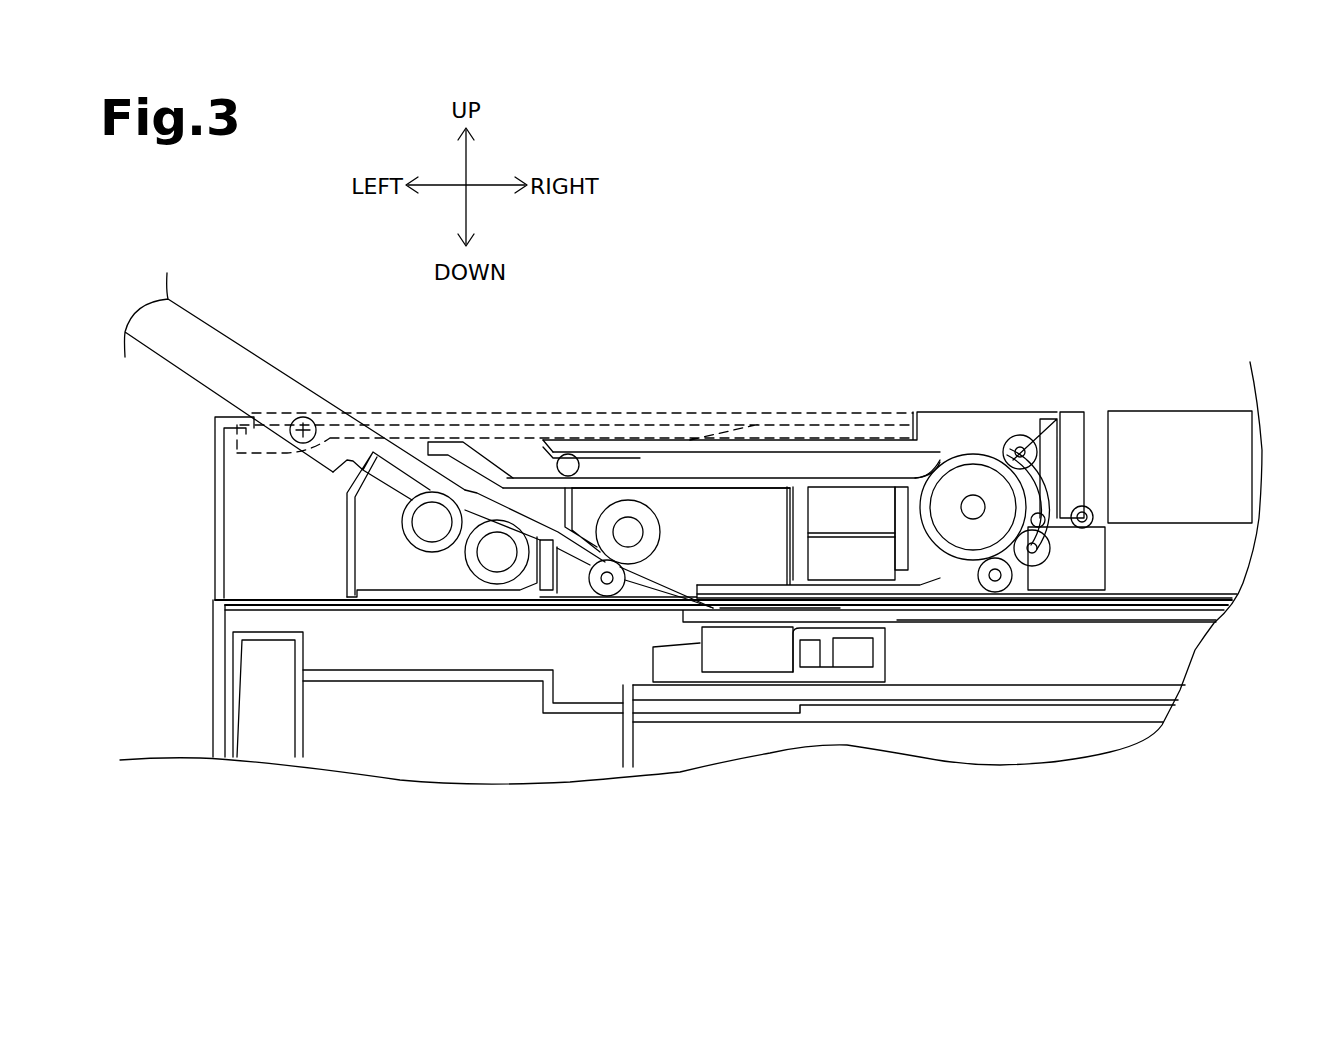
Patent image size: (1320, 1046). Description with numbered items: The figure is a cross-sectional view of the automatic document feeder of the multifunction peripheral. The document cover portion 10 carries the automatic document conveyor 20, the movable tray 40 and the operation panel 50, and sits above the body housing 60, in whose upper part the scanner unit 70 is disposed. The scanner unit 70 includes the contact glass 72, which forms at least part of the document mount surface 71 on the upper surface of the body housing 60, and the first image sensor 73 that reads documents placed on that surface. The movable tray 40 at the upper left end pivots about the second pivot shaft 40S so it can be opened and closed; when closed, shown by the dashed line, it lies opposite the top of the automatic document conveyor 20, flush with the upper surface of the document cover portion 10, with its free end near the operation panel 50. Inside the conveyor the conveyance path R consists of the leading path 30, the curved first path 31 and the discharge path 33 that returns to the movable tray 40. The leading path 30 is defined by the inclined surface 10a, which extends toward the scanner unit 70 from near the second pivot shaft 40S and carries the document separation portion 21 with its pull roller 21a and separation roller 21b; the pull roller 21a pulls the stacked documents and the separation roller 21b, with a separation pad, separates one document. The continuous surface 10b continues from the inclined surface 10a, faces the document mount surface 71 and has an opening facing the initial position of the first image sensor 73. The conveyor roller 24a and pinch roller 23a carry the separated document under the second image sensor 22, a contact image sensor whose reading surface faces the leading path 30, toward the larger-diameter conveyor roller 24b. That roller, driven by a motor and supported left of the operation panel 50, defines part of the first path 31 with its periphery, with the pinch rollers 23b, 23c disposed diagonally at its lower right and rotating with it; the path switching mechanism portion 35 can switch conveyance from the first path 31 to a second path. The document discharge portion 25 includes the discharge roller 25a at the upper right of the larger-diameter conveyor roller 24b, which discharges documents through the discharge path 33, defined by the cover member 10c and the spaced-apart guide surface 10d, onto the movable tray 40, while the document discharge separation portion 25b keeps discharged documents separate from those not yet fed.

The document cover portion 10 is at (205, 511).
The inclined surface 10a is at (395, 468).
The continuous surface 10b is at (872, 590).
The cover member 10c is at (682, 480).
The guide surface 10d is at (782, 452).
The automatic document conveyor 20 is at (736, 508).
The document separation portion 21 is at (381, 545).
The pull roller 21a is at (422, 547).
The separation roller 21b is at (478, 568).
The second image sensor 22 is at (858, 533).
The pinch roller 23a is at (597, 590).
The pinch roller 23b is at (997, 576).
The pinch roller 23c is at (1043, 553).
The conveyor roller 24a is at (647, 517).
The larger-diameter conveyor roller 24b is at (945, 542).
The document discharge portion 25 is at (601, 449).
The discharge roller 25a is at (1013, 448).
The document discharge separation portion 25b is at (458, 460).
The leading path 30 is at (668, 587).
The first path 31 is at (1042, 470).
The discharge path 33 is at (897, 467).
The path switching mechanism portion 35 is at (1069, 420).
The movable tray 40 is at (190, 363).
The second pivot shaft 40S is at (304, 418).
The operation panel 50 is at (1180, 467).
The body housing 60 is at (213, 731).
The scanner unit 70 is at (1168, 660).
The document mount surface 71 is at (1188, 598).
The contact glass 72 is at (1095, 610).
The first image sensor 73 is at (747, 649).
The conveyance path R is at (837, 467).